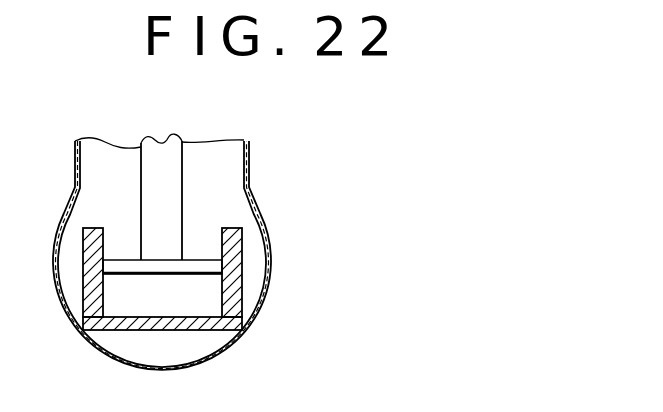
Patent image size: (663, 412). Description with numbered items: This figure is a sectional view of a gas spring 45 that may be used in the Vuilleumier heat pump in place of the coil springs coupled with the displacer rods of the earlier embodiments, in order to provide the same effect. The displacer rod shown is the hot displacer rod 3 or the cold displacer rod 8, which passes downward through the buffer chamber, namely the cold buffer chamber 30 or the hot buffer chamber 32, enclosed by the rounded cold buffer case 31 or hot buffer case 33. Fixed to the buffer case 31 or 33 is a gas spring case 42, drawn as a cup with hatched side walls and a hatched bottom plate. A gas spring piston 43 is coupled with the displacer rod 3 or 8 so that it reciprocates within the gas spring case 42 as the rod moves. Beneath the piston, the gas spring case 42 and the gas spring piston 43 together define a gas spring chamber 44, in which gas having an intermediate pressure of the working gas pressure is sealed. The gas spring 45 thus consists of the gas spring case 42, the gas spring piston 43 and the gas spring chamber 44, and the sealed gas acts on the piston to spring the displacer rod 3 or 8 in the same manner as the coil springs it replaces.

The hot displacer rod 3 is at (247, 197).
The cold displacer rod 8 is at (168, 187).
The cold buffer chamber 30 is at (241, 254).
The hot buffer chamber 32 is at (253, 245).
The cold buffer case 31 is at (252, 294).
The hot buffer case 33 is at (257, 316).
The gas spring case 42 is at (232, 294).
The gas spring piston 43 is at (200, 258).
The gas spring chamber 44 is at (182, 302).
The gas spring 45 is at (376, 314).